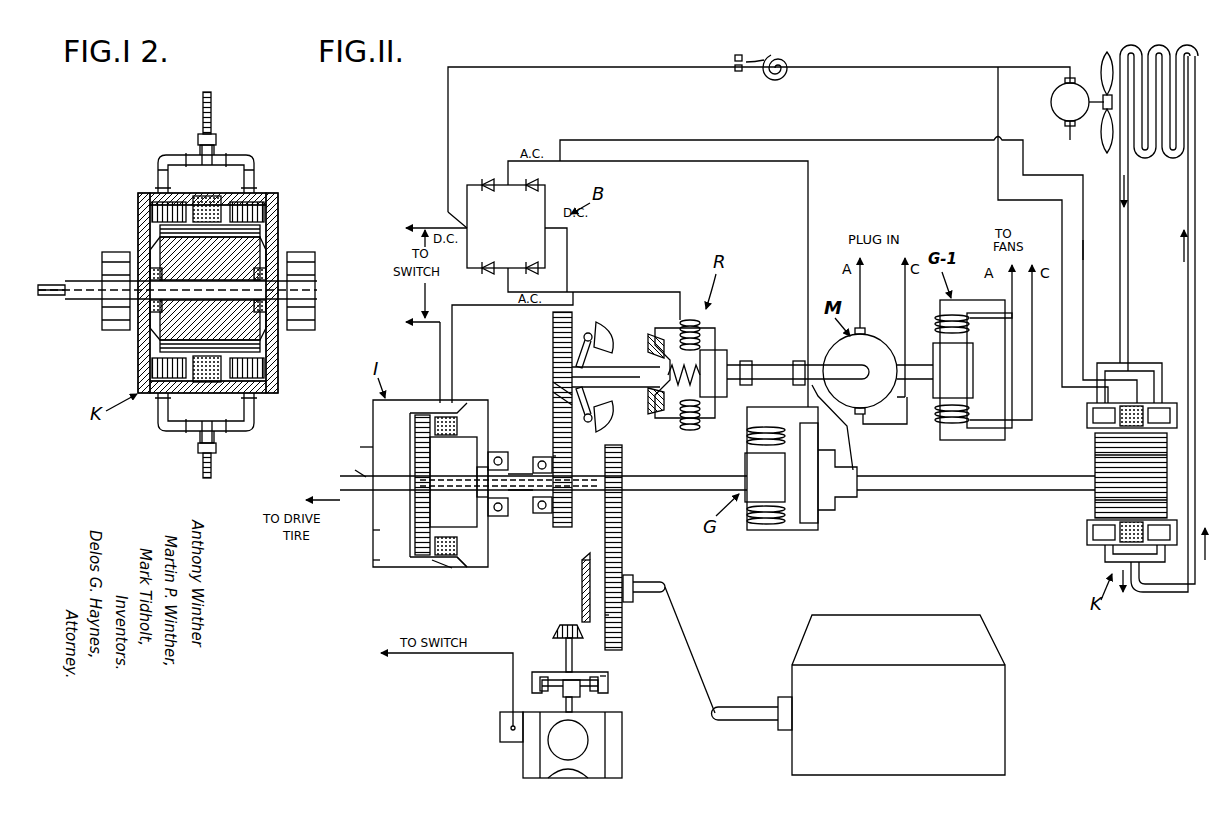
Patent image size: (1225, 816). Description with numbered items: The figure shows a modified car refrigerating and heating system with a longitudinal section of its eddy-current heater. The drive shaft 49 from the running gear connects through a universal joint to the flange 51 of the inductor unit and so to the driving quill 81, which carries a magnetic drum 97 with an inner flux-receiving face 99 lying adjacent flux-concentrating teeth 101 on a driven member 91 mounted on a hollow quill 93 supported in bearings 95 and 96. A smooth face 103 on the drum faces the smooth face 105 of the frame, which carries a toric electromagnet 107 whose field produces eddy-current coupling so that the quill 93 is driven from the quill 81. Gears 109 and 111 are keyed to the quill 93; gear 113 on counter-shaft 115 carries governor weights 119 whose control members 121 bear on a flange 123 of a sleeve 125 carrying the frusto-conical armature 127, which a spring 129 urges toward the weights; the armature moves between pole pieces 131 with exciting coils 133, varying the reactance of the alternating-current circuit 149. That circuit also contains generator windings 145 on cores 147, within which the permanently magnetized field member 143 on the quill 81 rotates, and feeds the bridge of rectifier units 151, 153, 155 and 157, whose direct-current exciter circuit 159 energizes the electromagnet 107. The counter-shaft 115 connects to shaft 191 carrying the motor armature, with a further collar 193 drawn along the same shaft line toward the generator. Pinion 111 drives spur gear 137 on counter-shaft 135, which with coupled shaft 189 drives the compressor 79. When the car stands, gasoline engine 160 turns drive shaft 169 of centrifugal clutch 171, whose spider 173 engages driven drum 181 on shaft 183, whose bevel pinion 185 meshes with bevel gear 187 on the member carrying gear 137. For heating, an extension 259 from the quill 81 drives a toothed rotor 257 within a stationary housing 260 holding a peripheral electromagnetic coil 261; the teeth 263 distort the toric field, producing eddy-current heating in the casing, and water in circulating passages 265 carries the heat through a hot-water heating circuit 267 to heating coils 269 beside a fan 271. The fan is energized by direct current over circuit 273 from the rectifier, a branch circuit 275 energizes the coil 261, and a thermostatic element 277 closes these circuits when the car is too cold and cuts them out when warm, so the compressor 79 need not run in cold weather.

In FIG. 11, the drive shaft 49 is at (352, 464).
In FIG. 11, the flange 51 is at (356, 439).
In FIG. 11, the compressor 79 is at (916, 750).
In FIG. 11, the quill 81 is at (509, 490).
In FIG. 11, the driven member 91 is at (470, 512).
In FIG. 11, the hollow quill 93 is at (521, 474).
In FIG. 11, the bearing 95 is at (497, 452).
In FIG. 11, the bearing 96 is at (541, 503).
In FIG. 11, the magnetic drum 97 is at (374, 565).
In FIG. 11, the flux-receiving face 99 is at (422, 560).
In FIG. 11, the flux-concentrating teeth 101 is at (376, 533).
In FIG. 11, the smooth face 103 is at (445, 566).
In FIG. 11, the smooth face 105 is at (462, 570).
In FIG. 11, the electromagnet 107 is at (449, 436).
In FIG. 11, the gear 109 is at (553, 458).
In FIG. 11, the gear 111 is at (617, 496).
In FIG. 11, the gear 113 is at (553, 328).
In FIG. 11, the counter-shaft 115 is at (641, 388).
In FIG. 11, the governor weights 119 is at (600, 330).
In FIG. 11, the control members 121 is at (560, 372).
In FIG. 11, the flange 123 is at (614, 338).
In FIG. 11, the sleeve 125 is at (658, 412).
In FIG. 11, the armature 127 is at (650, 340).
In FIG. 11, the spring 129 is at (706, 370).
In FIG. 11, the pole pieces 131 is at (715, 333).
In FIG. 11, the exciting coils 133 is at (690, 318).
In FIG. 11, the counter-shaft 135 is at (624, 577).
In FIG. 11, the spur gear 137 is at (609, 616).
In FIG. 11, the field member 143 is at (758, 470).
In FIG. 11, the generator windings 145 is at (756, 432).
In FIG. 11, the magnetic cores 147 is at (789, 532).
In FIG. 11, the alternating-current circuit 149 is at (808, 256).
In FIG. 11, the rectifier unit 151 is at (482, 186).
In FIG. 11, the rectifier unit 153 is at (530, 193).
In FIG. 11, the rectifier unit 155 is at (482, 271).
In FIG. 11, the rectifier unit 157 is at (533, 272).
In FIG. 11, the direct-current exciter circuit 159 is at (424, 228).
In FIG. 11, the gasoline engine 160 is at (598, 760).
In FIG. 11, the drive shaft 169 is at (575, 703).
In FIG. 11, the centrifugal clutch 171 is at (610, 684).
In FIG. 11, the spider 173 is at (551, 680).
In FIG. 11, the driven drum 181 is at (606, 672).
In FIG. 11, the shaft 183 is at (560, 634).
In FIG. 11, the bevel pinion 185 is at (556, 627).
In FIG. 11, the bevel gear 187 is at (581, 581).
In FIG. 11, the shaft 189 is at (656, 586).
In FIG. 11, the shaft 191 is at (770, 368).
In FIG. 11, the collar 193 is at (798, 384).
In FIG. 12, the toothed rotor 257 is at (268, 246).
In FIG. 11, the toothed rotor 257 is at (1100, 479).
In FIG. 12, the extension 259 is at (82, 284).
In FIG. 11, the extension 259 is at (950, 480).
In FIG. 12, the housing 260 is at (256, 196).
In FIG. 11, the housing 260 is at (1087, 420).
In FIG. 12, the electromagnetic coil 261 is at (205, 200).
In FIG. 11, the electromagnetic coil 261 is at (1120, 425).
In FIG. 12, the teeth 263 is at (165, 229).
In FIG. 11, the teeth 263 is at (1110, 503).
In FIG. 12, the water circulating passages 265 is at (160, 203).
In FIG. 11, the water circulating passages 265 is at (1166, 414).
In FIG. 12, the hot-water heating circuit 267 is at (212, 95).
In FIG. 11, the hot-water heating circuit 267 is at (1195, 191).
In FIG. 11, the heating coils 269 is at (1153, 50).
In FIG. 11, the fan 271 is at (1098, 86).
In FIG. 11, the circuit 273 is at (880, 139).
In FIG. 11, the branch circuit 275 is at (1083, 241).
In FIG. 11, the thermostatic element 277 is at (752, 60).